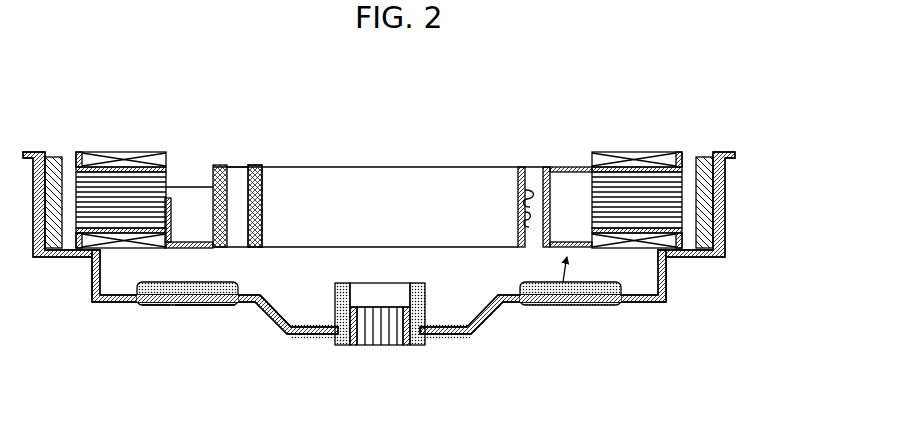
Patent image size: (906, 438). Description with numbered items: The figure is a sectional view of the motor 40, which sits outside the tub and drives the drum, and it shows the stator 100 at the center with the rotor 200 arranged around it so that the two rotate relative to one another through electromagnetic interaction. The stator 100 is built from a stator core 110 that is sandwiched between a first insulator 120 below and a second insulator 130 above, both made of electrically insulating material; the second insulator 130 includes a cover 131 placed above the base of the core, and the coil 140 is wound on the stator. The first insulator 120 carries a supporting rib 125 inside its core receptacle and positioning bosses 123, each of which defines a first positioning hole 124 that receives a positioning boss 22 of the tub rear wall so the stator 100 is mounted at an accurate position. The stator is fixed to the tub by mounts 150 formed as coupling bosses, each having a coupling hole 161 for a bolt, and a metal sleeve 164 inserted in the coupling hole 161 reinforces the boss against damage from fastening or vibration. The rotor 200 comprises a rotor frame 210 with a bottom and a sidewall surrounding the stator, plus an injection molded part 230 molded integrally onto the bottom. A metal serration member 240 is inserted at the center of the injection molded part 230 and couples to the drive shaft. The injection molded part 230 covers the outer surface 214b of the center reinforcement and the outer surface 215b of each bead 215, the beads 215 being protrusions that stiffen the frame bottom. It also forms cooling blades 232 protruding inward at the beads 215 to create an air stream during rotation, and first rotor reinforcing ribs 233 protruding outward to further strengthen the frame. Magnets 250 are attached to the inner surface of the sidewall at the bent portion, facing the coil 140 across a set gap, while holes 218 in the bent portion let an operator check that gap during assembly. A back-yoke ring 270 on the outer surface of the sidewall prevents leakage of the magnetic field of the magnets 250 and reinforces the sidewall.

The stator 100 is at (641, 136).
The stator core 110 is at (145, 180).
The first insulator 120 is at (572, 305).
The positioning boss 123 is at (518, 182).
The first positioning hole 124 is at (521, 224).
The supporting rib 125 is at (173, 212).
The second insulator 130 is at (578, 159).
The cover 131 is at (553, 165).
The coil 140 is at (112, 163).
The mount 150 is at (269, 167).
The coupling hole 161 is at (233, 180).
The sleeve 164 is at (263, 203).
The positioning boss 22 is at (523, 196).
The rotor 200 is at (655, 314).
The rotor frame 210 is at (90, 302).
The outer surface of center reinforcement 214b is at (432, 340).
The bead 215 is at (148, 282).
The outer surface of bead 215b is at (190, 305).
The hole 218 is at (73, 257).
The injection molded part 230 is at (268, 283).
The cooling blade 232 is at (217, 270).
The first rotor reinforcing rib 233 is at (152, 305).
The serration member 240 is at (355, 345).
The magnet 250 is at (58, 157).
The back-yoke ring 270 is at (723, 198).
The motor 40 is at (395, 415).